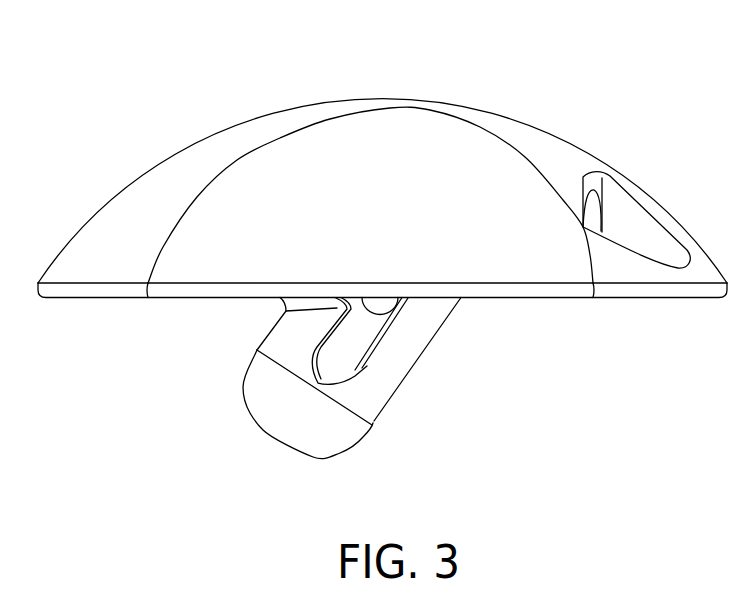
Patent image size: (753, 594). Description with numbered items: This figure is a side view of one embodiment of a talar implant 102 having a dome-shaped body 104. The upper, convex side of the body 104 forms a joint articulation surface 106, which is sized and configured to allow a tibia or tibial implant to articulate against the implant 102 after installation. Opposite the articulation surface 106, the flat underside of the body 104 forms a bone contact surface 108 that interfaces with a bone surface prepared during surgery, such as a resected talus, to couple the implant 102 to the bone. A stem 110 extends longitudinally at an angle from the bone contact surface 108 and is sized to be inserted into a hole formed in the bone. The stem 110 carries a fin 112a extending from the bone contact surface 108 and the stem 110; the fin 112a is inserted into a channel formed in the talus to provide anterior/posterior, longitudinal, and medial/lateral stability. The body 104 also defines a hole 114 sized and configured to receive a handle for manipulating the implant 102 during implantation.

The implant 102 is at (632, 83).
The body 104 is at (382, 179).
The articulation surface 106 is at (398, 99).
The bone contact surface 108 is at (527, 298).
The stem 110 is at (410, 378).
The fin 112a is at (337, 363).
The hole 114 is at (590, 217).